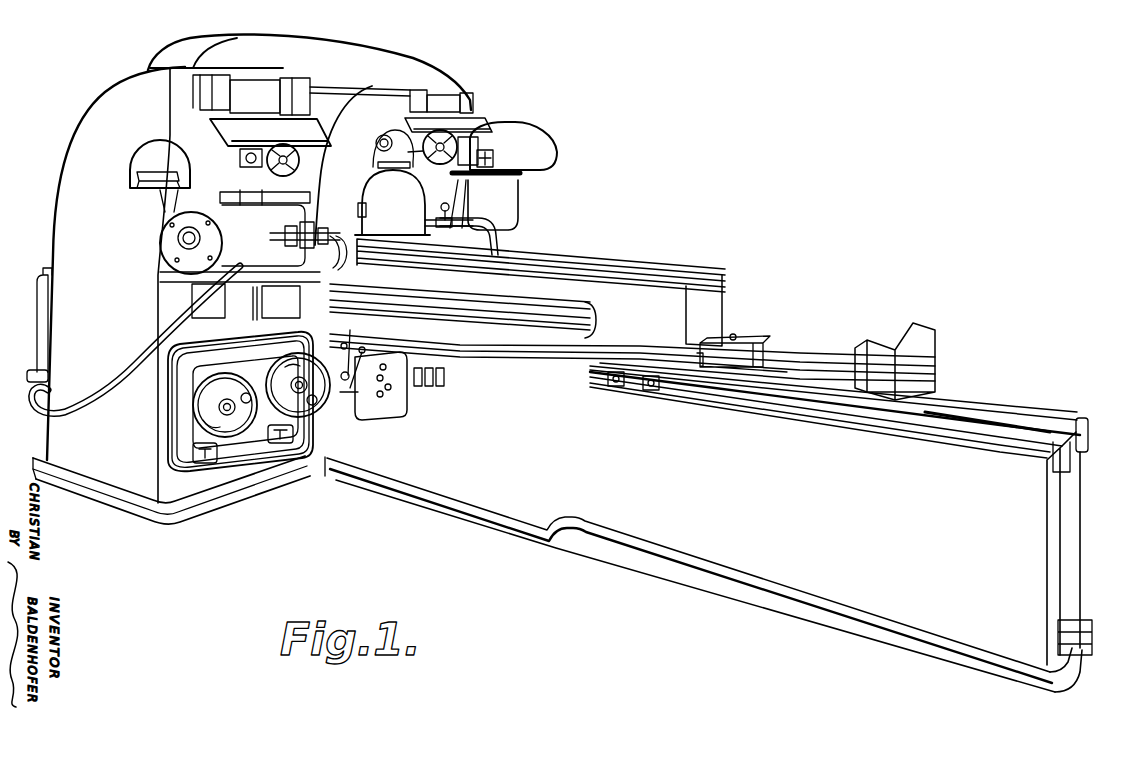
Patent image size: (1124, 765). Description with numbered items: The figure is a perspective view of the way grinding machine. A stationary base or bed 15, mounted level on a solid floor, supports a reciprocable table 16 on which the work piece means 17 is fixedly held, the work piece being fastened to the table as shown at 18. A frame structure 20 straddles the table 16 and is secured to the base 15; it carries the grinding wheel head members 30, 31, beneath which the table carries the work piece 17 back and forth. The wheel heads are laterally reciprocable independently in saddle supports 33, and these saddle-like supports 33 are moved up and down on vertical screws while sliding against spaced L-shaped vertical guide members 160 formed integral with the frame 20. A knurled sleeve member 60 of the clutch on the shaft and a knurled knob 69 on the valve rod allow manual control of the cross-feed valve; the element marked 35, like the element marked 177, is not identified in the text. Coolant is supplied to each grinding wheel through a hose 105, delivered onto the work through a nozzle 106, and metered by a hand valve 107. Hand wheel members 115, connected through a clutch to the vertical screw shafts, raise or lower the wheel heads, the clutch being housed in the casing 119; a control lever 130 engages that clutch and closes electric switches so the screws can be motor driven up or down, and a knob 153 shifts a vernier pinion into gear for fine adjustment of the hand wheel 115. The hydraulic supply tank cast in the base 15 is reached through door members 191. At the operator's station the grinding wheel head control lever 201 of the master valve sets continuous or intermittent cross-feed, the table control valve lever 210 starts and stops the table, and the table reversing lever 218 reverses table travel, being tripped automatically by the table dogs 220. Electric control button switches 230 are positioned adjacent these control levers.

The base or bed 15 is at (787, 586).
The reciprocable table 16 is at (808, 373).
The work piece means 17 is at (670, 297).
The fastening of work piece 18 is at (743, 344).
The frame structure 20 is at (59, 246).
The grinding wheel head member 30 is at (507, 193).
The grinding wheel head member 31 is at (156, 242).
The saddle support 33 is at (145, 146).
The gear box 35 is at (467, 158).
The knurled cylindrical projecting sleeve member 60 is at (485, 155).
The knurled knob 69 is at (386, 138).
The hose 105 is at (507, 238).
The nozzle 106 is at (336, 266).
The hand valve 107 is at (297, 228).
The hand wheel member 115 is at (200, 402).
The casing 119 is at (183, 428).
The control lever 130 is at (212, 463).
The knob 153 is at (342, 425).
The vertical guide member 160 is at (288, 82).
The guard 177 is at (414, 202).
The power unit opening or door member 191 is at (400, 417).
The grinding wheel head control lever 201 is at (360, 360).
The table control valve lever 210 is at (405, 395).
The table reversing lever 218 is at (371, 320).
The table dog 220 is at (648, 388).
The electric control button switch 230 is at (440, 388).